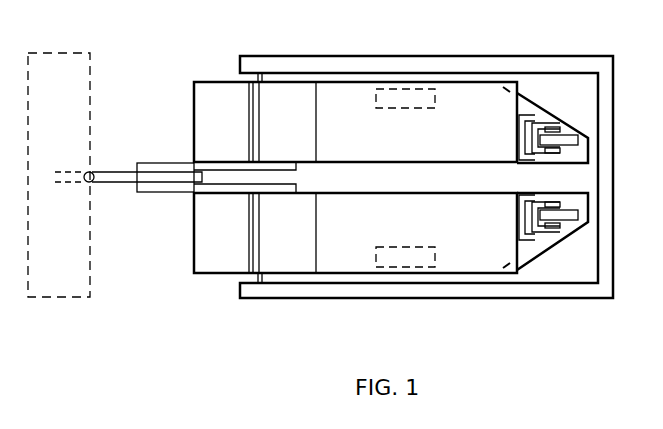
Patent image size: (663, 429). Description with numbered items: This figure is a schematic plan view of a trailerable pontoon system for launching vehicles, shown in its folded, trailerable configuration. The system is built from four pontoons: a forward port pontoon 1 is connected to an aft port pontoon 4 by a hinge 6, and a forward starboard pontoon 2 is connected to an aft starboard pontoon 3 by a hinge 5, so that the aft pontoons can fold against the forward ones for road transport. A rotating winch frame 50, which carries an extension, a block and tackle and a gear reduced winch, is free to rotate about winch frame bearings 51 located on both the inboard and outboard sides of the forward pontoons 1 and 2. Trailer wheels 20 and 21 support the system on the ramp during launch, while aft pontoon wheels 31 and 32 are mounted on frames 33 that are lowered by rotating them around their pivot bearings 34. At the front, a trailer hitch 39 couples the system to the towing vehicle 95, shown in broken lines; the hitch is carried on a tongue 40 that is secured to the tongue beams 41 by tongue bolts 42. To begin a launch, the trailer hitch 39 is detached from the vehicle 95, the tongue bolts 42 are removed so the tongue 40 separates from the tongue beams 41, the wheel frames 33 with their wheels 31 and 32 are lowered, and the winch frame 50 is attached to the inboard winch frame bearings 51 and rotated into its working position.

The forward port pontoon 1 is at (207, 110).
The forward starboard pontoon 2 is at (205, 250).
The aft starboard pontoon 3 is at (351, 258).
The aft port pontoon 4 is at (360, 95).
The hinge 5 is at (250, 247).
The hinge 6 is at (252, 108).
The trailer wheel 20 is at (418, 100).
The trailer wheel 21 is at (415, 258).
The aft pontoon wheel 31 is at (570, 218).
The aft pontoon wheel 32 is at (567, 138).
The frame 33 is at (512, 146).
The pivot bearing 34 is at (513, 125).
The trailer hitch 39 is at (86, 173).
The tongue 40 is at (113, 178).
The tongue beams 41 is at (168, 187).
The tongue bolts 42 is at (178, 163).
The rotating winch frame 50 is at (500, 66).
The winch frame bearings 51 is at (263, 73).
The vehicle 95 is at (67, 78).